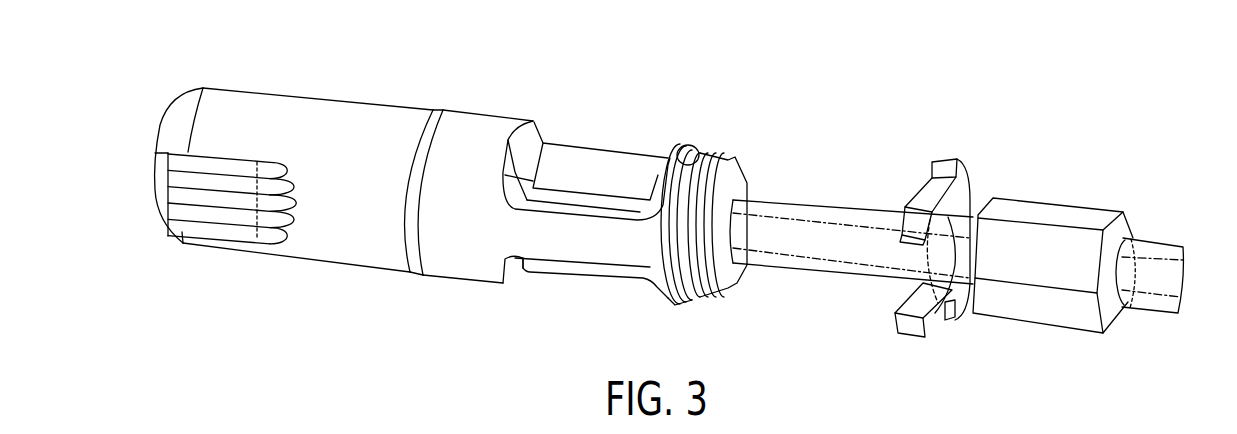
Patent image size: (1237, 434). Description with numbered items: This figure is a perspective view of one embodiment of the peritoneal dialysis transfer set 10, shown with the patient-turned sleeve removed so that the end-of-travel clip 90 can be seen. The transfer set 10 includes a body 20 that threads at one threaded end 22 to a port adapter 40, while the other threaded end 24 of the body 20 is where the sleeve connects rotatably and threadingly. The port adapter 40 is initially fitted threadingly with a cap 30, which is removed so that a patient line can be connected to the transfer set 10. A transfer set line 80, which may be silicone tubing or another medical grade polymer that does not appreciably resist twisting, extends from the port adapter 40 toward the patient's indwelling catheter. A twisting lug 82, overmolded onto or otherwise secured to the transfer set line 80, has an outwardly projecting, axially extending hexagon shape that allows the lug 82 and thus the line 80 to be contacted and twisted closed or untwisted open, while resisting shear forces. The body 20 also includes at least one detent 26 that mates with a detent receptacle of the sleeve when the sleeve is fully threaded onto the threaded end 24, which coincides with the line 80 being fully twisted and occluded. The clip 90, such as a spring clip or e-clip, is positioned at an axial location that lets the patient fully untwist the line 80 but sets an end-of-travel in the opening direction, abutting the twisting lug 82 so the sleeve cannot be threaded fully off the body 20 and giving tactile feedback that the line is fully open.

The PD transfer set 10 is at (878, 108).
The body 20 is at (548, 108).
The threaded end 22 is at (455, 115).
The threaded end 24 is at (707, 155).
The detent 26 is at (687, 143).
The cap 30 is at (168, 92).
The port adapter 40 is at (417, 290).
The transfer set line 80 is at (1153, 248).
The twisting lug 82 is at (1072, 203).
The clip 90 is at (953, 158).